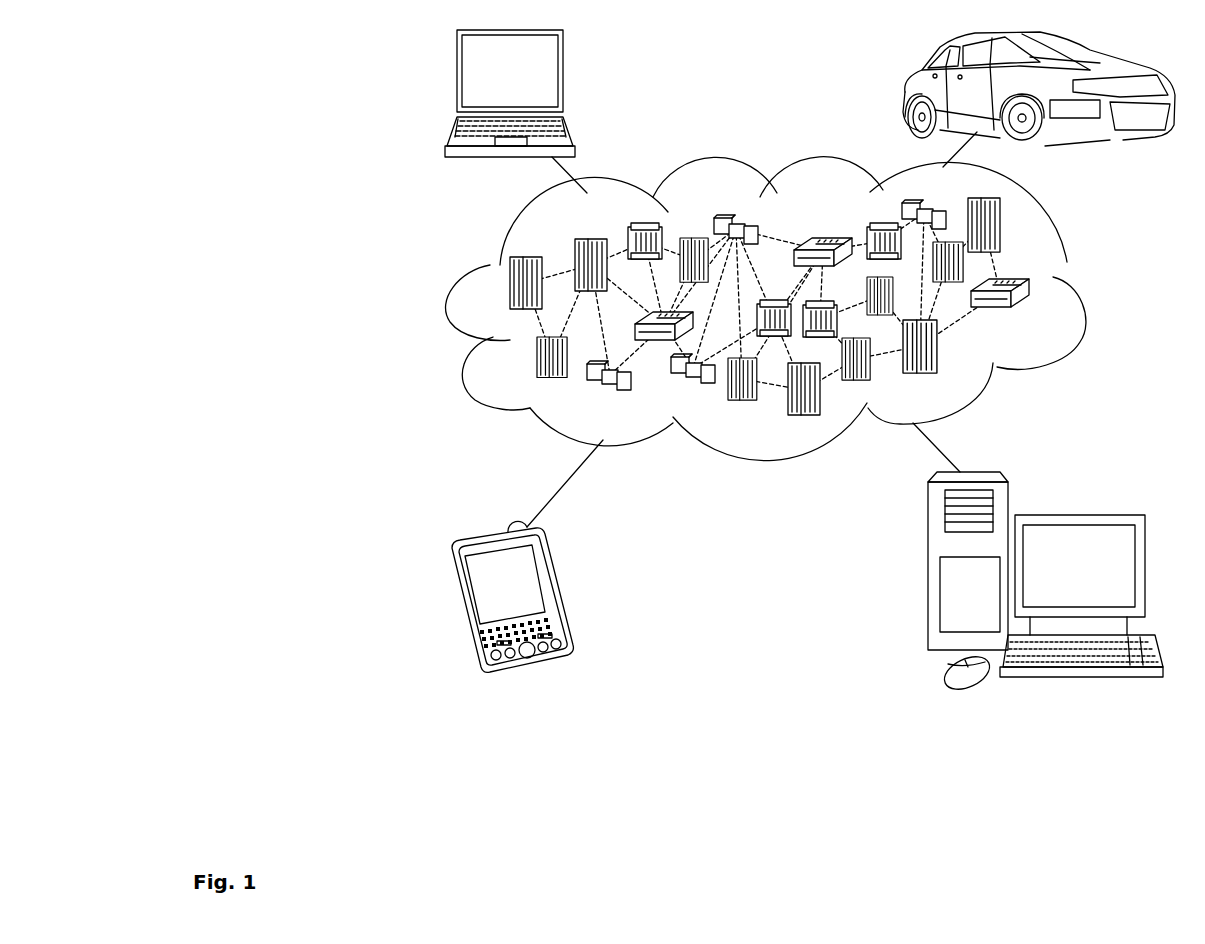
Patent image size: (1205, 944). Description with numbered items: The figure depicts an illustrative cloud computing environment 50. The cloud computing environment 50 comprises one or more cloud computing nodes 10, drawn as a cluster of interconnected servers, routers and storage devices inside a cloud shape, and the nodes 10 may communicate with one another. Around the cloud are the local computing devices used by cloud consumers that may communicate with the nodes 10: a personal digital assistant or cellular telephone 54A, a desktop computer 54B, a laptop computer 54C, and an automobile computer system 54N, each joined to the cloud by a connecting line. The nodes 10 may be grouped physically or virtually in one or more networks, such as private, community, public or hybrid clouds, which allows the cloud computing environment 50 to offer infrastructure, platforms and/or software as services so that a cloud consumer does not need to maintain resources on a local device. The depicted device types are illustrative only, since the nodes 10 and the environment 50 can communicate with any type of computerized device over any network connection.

The cloud computing node 10 is at (1037, 317).
The cloud computing environment 50 is at (1078, 288).
The personal digital assistant or cellular telephone 54A is at (555, 588).
The desktop computer 54B is at (1077, 513).
The laptop computer 54C is at (563, 78).
The automobile computer system 54N is at (907, 88).